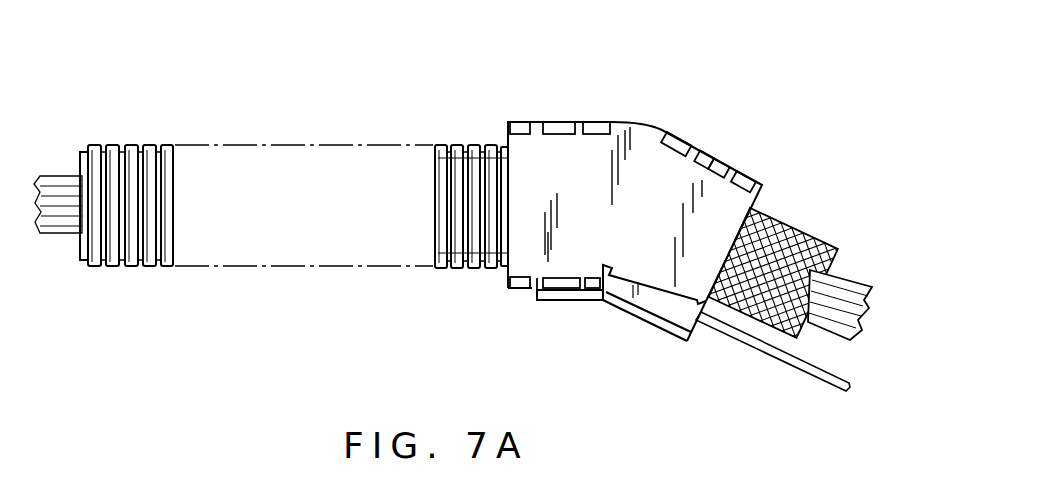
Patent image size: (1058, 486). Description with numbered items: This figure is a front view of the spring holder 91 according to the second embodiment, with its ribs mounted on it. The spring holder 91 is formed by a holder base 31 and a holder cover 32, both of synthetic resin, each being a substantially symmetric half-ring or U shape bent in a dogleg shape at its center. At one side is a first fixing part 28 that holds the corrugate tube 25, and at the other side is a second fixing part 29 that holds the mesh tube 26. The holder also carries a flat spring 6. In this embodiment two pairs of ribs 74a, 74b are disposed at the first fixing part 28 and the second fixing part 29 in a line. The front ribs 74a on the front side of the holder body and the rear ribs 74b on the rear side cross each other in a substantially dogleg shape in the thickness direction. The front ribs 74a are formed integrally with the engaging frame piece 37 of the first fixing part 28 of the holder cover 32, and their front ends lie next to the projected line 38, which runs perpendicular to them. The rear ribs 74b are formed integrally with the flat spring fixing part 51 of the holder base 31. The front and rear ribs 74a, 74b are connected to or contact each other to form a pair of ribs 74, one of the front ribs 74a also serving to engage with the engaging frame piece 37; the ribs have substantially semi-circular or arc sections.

The flat spring 6 is at (808, 373).
The corrugate tube 25 is at (475, 146).
The mesh tube 26 is at (808, 226).
The first fixing part 28 is at (556, 155).
The second fixing part 29 is at (707, 207).
The holder base 31 is at (668, 318).
The holder cover 32 is at (540, 236).
The engaging frame piece 37 is at (537, 294).
The projected line 38 is at (517, 290).
The flat spring fixing part 51 is at (684, 346).
The pair of ribs 74 is at (619, 349).
The front ribs 74a is at (560, 303).
The rear ribs 74b is at (654, 329).
The spring holder 91 is at (653, 116).